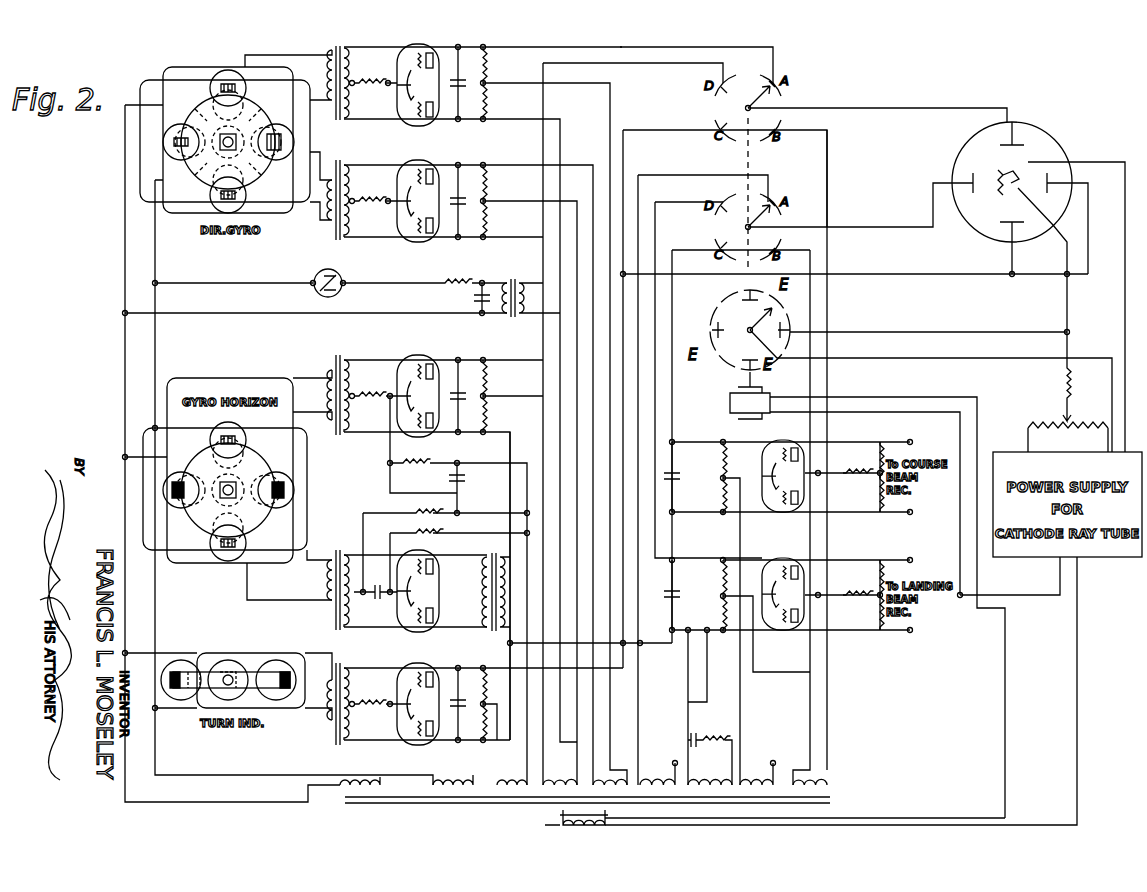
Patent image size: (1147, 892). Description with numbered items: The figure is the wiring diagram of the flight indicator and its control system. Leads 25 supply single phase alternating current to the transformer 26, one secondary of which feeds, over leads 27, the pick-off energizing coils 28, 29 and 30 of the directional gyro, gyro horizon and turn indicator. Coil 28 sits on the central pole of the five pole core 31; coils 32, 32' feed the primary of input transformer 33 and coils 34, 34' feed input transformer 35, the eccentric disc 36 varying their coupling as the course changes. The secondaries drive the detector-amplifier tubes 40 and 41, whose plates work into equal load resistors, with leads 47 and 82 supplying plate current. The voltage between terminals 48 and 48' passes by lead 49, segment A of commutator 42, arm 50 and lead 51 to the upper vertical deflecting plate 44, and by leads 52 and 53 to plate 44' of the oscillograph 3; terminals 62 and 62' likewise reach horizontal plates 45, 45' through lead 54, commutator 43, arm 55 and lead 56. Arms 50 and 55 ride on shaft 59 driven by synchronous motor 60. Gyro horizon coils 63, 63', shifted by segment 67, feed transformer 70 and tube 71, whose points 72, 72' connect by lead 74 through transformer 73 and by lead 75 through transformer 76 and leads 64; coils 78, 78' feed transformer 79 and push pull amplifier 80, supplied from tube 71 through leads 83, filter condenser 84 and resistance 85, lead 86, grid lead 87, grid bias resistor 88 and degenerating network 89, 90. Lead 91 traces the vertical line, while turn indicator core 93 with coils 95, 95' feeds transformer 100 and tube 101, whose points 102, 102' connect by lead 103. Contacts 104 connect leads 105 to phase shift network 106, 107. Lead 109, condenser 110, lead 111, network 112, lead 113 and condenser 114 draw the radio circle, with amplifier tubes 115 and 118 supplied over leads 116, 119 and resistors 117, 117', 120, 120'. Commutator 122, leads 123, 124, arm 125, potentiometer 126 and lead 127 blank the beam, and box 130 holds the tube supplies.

The oscillograph 3 is at (966, 136).
The leads 25 is at (560, 821).
The transformer 26 is at (597, 800).
The leads 27 is at (229, 810).
The pick-off energizing coil 28 is at (251, 107).
The pick-off energizing coil 29 is at (251, 470).
The pick-off energizing coil 30 is at (235, 662).
The five pole core 31 is at (213, 82).
The coil 32 is at (225, 76).
The coil 32' is at (204, 204).
The input transformer 33 is at (327, 78).
The coil 34 is at (146, 142).
The coil 34' is at (324, 153).
The input transformer 35 is at (327, 200).
The circular disc 36 is at (251, 174).
The detector-amplifier tube 40 is at (399, 40).
The detector-amplifier tube 41 is at (400, 191).
The commutator 42 is at (836, 77).
The commutator 43 is at (816, 198).
The upper vertical deflecting plate 44 is at (1031, 123).
The lower vertical deflecting plate 44' is at (994, 247).
The horizontal deflecting plate 45 is at (940, 174).
The horizontal deflecting plate 45' is at (1076, 291).
The lead 47 is at (590, 760).
The outer terminal 48 is at (623, 54).
The outer terminal 48' is at (530, 430).
The lead 49 is at (630, 44).
The contact arm 50 is at (739, 96).
The lead 51 is at (890, 106).
The lead 52 is at (630, 130).
The lead 53 is at (880, 274).
The lead 54 is at (659, 175).
The contact arm 55 is at (738, 219).
The lead 56 is at (847, 223).
The shaft 59 is at (755, 162).
The synchronous motor 60 is at (728, 414).
The outer terminal 62 is at (538, 464).
The outer terminal 62' is at (530, 493).
The coil 63 is at (184, 471).
The coil 63' is at (294, 486).
The lead 64 is at (510, 643).
The spherical segment 67 is at (210, 542).
The input transformer 70 is at (337, 385).
The detector-amplifier tube 71 is at (412, 356).
The point 72 is at (502, 364).
The point 72' is at (481, 425).
The transformer 73 is at (531, 288).
The lead 74 is at (544, 157).
The lead 75 is at (510, 426).
The output transformer 76 is at (494, 582).
The coil 78 is at (239, 437).
The coil 78' is at (228, 556).
The transformer 79 is at (337, 581).
The push pull amplifier tube 80 is at (375, 670).
The lead 82 is at (575, 758).
The lead 83 is at (508, 770).
The condenser 84 is at (464, 478).
The resistance 85 is at (458, 609).
The lead 86 is at (462, 498).
The lead 87 is at (393, 535).
The grid bias resistor 88 is at (422, 556).
The resistance 89 is at (406, 517).
The condenser 90 is at (375, 601).
The lead 91 is at (827, 540).
The three pole core 93 is at (178, 663).
The coil 95 is at (231, 657).
The coil 95' is at (286, 667).
The input transformer 100 is at (342, 696).
The detector-amplifier tube 101 is at (420, 662).
The point 102 is at (468, 693).
The point 102' is at (496, 732).
The lead 103 is at (773, 674).
The contacts 104 is at (328, 270).
The leads 105 is at (195, 285).
The phase shift network 106 is at (462, 272).
The phase shift network 107 is at (464, 299).
The lead 109 is at (725, 659).
The condenser 110 is at (689, 477).
The lead 111 is at (700, 770).
The phase shift network 112 is at (694, 734).
The lead 113 is at (707, 686).
The condenser 114 is at (660, 593).
The D. C. amplifier tube 115 is at (783, 463).
The lead 116 is at (739, 766).
The resistor 117 is at (740, 460).
The resistor 117' is at (705, 496).
The D. C. amplifier tube 118 is at (783, 578).
The lead 119 is at (786, 766).
The resistor 120 is at (703, 578).
The resistor 120' is at (703, 614).
The commutator 122 is at (704, 297).
The lead 123 is at (901, 332).
The lead 124 is at (1068, 303).
The rotating arm 125 is at (745, 317).
The potentiometer 126 is at (1063, 408).
The lead 127 is at (937, 358).
The box 130 is at (1016, 562).